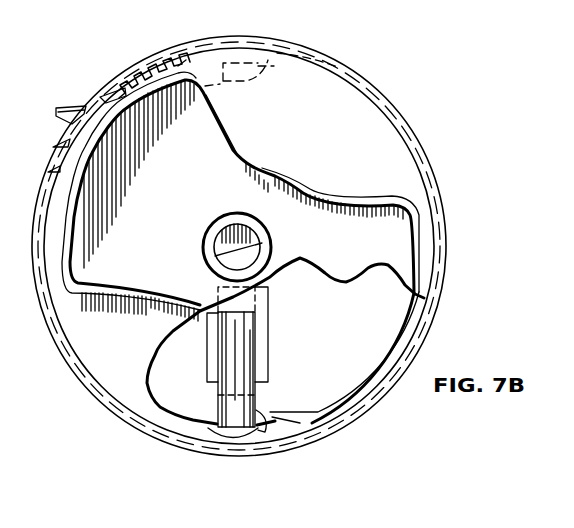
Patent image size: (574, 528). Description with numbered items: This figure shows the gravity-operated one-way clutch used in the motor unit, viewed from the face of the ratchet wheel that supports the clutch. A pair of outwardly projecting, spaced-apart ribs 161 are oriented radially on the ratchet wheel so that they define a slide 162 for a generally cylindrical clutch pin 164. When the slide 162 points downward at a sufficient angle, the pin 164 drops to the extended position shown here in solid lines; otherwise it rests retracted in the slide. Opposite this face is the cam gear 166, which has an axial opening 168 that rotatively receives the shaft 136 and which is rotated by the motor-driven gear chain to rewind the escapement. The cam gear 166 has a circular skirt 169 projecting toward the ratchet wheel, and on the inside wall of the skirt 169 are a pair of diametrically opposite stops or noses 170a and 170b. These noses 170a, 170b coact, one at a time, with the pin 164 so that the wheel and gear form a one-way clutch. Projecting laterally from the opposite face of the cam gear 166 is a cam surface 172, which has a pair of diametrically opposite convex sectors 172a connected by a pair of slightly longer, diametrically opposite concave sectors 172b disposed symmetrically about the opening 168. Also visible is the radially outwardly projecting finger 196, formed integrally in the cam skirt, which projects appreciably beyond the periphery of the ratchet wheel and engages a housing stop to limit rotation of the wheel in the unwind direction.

The shaft 136 is at (250, 233).
The ribs 161 is at (260, 337).
The slide 162 is at (245, 313).
The clutch pin 164 is at (266, 432).
The cam gear 166 is at (180, 70).
The axial opening 168 is at (205, 256).
The circular skirt 169 is at (240, 428).
The stop or nose 170a is at (415, 448).
The stop or nose 170b is at (296, 31).
The cam surface 172 is at (232, 133).
The convex sectors 172a is at (377, 259).
The concave sectors 172b is at (214, 176).
The finger 196 is at (68, 112).